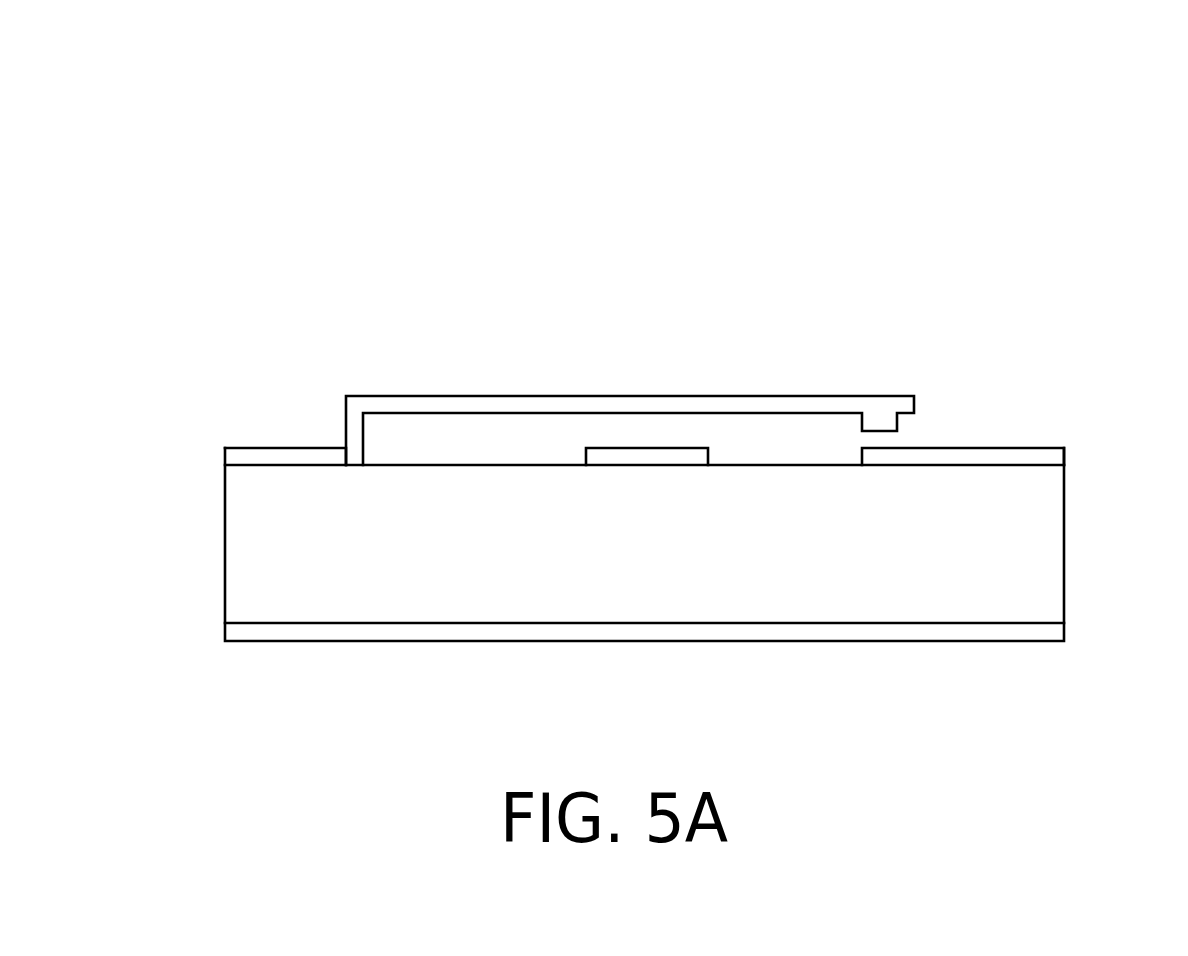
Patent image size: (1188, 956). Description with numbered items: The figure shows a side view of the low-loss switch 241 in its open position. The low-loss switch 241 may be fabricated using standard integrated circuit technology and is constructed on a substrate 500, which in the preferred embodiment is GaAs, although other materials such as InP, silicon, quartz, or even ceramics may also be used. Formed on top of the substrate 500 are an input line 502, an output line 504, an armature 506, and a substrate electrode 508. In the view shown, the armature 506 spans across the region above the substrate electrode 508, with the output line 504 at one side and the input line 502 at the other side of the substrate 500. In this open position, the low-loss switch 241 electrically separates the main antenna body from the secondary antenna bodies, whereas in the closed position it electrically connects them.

The low-loss switch 241 is at (982, 172).
The substrate 500 is at (270, 525).
The input line 502 is at (985, 446).
The output line 504 is at (297, 447).
The armature 506 is at (707, 396).
The substrate electrode 508 is at (617, 447).